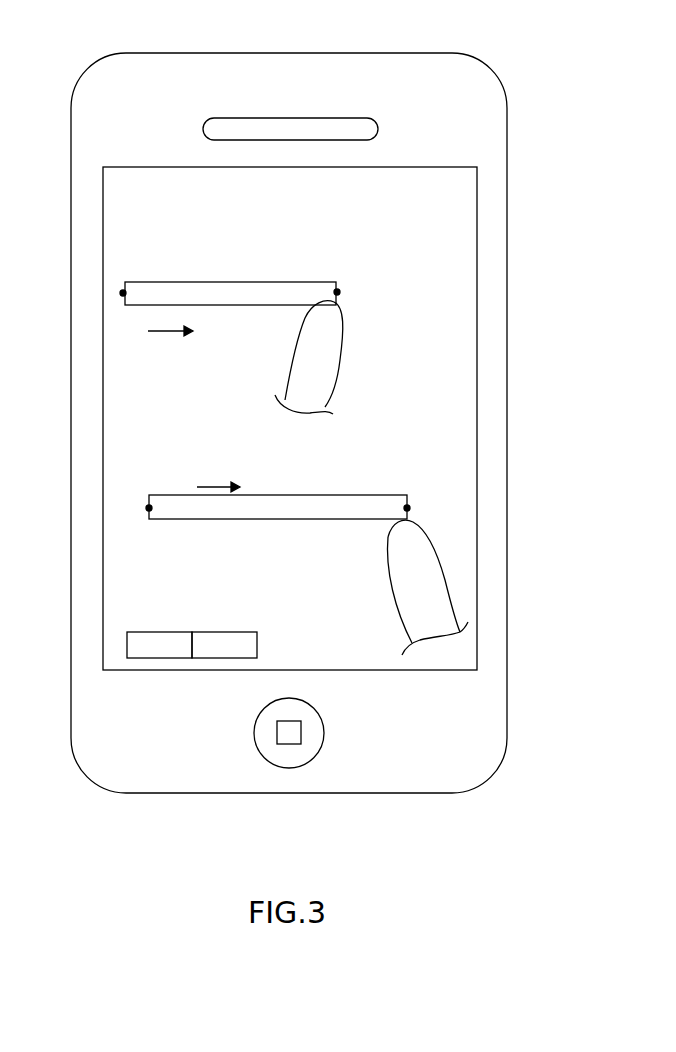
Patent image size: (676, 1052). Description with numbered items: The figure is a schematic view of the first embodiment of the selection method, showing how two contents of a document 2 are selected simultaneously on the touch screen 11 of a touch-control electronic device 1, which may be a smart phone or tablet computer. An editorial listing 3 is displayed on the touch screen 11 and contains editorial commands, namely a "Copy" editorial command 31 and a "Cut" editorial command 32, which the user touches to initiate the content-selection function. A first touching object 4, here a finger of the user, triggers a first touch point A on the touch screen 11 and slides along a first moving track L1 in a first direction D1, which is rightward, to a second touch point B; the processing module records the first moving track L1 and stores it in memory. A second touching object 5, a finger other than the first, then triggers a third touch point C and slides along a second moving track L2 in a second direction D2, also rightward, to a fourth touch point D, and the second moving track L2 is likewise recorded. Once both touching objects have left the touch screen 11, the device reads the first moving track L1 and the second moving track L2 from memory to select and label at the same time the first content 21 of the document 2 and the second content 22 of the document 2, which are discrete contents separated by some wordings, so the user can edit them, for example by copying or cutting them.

The touch-control electronic device 1 is at (507, 142).
The touch screen 11 is at (477, 215).
The document 2 is at (156, 196).
The first content 21 is at (218, 305).
The second content 22 is at (288, 495).
The first touching object 4 is at (332, 333).
The second touching object 5 is at (435, 585).
The editorial listing 3 is at (192, 754).
The editorial command 31 is at (150, 658).
The editorial command 32 is at (240, 658).
The first touch point A is at (122, 293).
The second touch point B is at (337, 289).
The third touch point C is at (148, 508).
The fourth touch point D is at (407, 506).
The first moving track L1 is at (140, 282).
The second moving track L2 is at (170, 495).
The first direction D1 is at (170, 324).
The second direction D2 is at (218, 480).